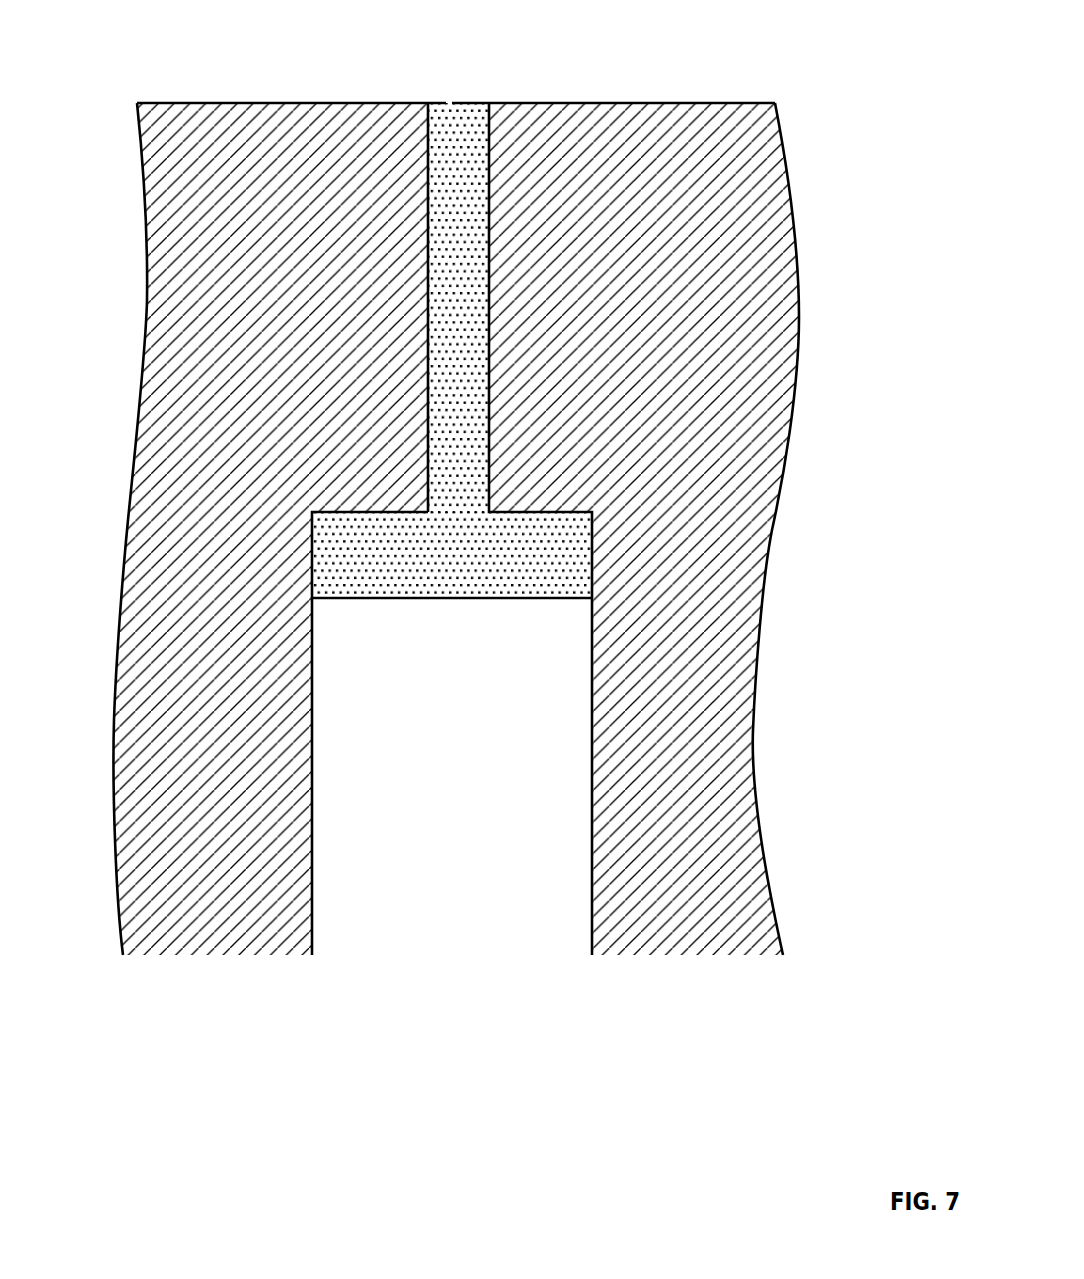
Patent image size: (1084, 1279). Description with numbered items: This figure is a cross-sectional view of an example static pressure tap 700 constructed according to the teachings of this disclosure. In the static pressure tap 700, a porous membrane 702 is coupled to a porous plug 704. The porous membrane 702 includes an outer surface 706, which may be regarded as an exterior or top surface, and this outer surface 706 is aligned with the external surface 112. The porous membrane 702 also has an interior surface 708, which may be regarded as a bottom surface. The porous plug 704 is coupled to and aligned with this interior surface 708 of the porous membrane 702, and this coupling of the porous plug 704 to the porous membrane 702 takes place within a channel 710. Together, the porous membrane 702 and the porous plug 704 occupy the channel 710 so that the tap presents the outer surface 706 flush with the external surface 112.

The static pressure tap 700 is at (470, 482).
The external surface 112 is at (284, 100).
The porous membrane 702 is at (317, 489).
The porous plug 704 is at (428, 210).
The outer surface 706 is at (470, 101).
The interior surface 708 is at (472, 112).
The channel 710 is at (427, 362).